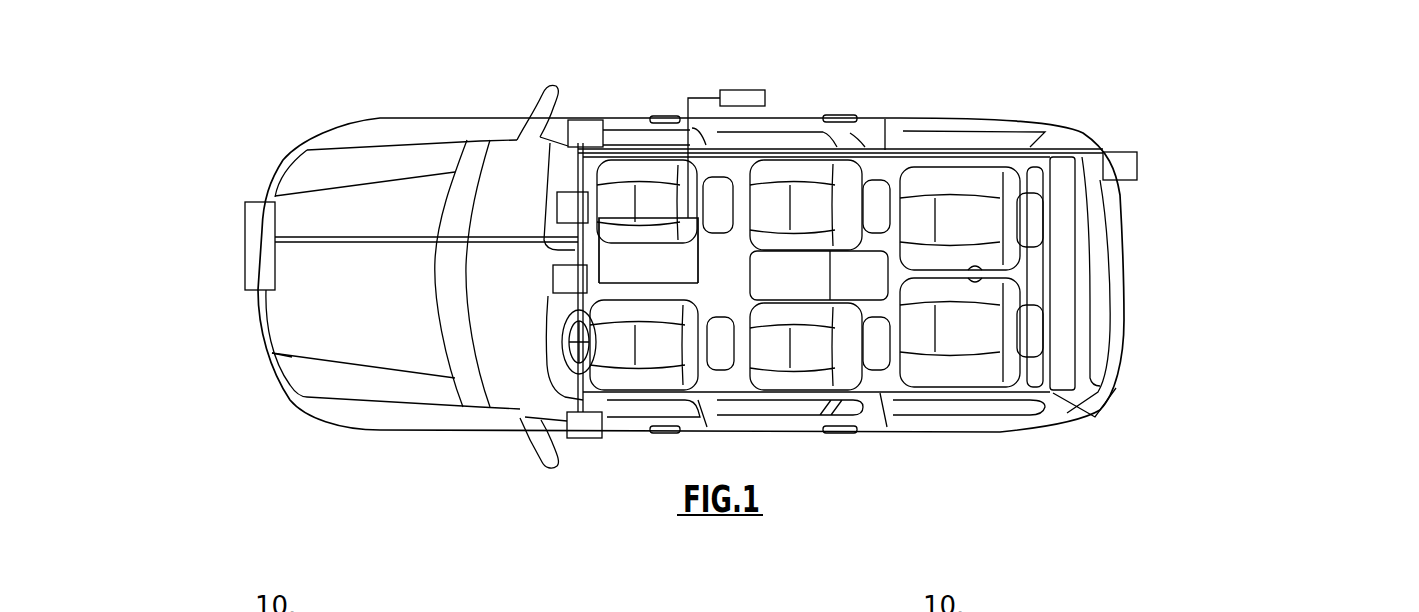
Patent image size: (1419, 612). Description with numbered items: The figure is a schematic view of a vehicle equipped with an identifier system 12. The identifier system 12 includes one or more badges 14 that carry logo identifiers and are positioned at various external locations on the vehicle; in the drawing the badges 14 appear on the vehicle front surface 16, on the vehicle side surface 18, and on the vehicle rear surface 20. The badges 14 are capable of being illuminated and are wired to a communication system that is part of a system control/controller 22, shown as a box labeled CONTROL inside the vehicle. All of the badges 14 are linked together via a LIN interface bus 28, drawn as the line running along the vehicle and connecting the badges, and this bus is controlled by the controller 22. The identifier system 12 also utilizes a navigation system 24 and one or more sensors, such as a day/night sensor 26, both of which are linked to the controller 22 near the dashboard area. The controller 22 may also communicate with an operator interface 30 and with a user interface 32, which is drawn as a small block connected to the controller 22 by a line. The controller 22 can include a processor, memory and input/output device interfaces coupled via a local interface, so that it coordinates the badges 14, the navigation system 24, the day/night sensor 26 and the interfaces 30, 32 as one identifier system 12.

The identifier system 12 is at (691, 276).
The badges 14 is at (245, 210).
The vehicle front surface 16 is at (263, 322).
The vehicle side surface 18 is at (910, 117).
The vehicle rear surface 20 is at (1123, 373).
The system control/controller 22 is at (648, 218).
The navigation system 24 is at (552, 283).
The day/night sensor 26 is at (568, 197).
The LIN interface bus 28 is at (1057, 147).
The operator interface 30 is at (698, 280).
The user interface 32 is at (754, 90).